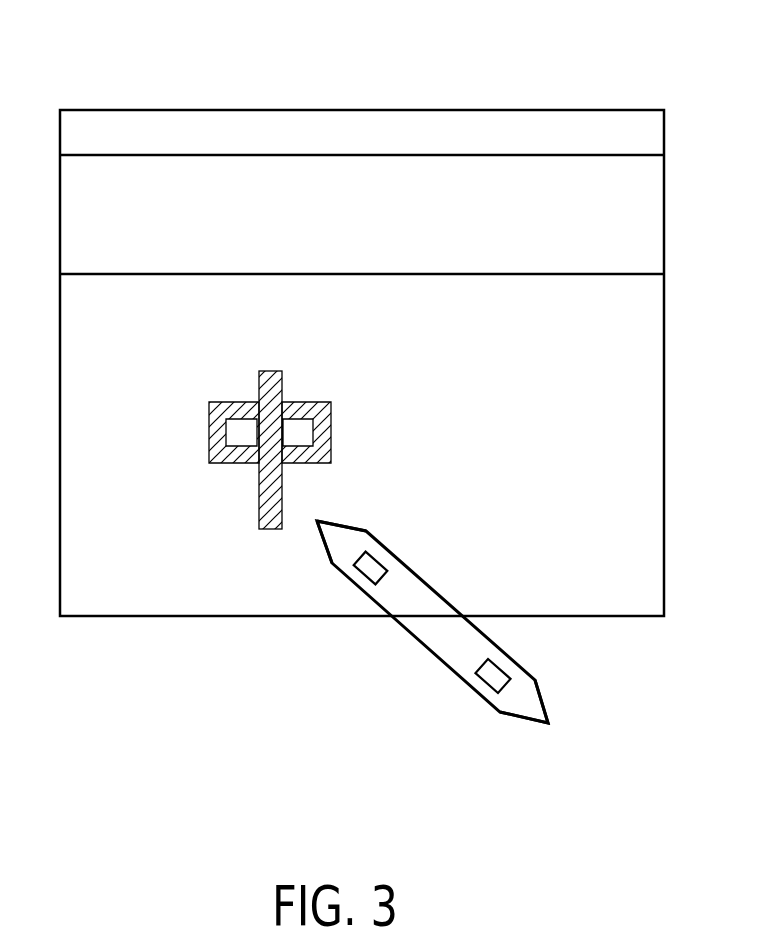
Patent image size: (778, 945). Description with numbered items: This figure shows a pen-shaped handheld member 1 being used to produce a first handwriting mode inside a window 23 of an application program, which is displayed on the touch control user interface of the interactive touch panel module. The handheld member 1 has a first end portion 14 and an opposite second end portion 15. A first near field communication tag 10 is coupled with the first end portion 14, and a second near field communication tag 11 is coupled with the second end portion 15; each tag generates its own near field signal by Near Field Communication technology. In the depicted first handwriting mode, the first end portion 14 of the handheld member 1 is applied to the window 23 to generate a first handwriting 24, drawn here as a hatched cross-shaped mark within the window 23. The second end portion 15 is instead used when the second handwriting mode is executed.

The handheld member 1 is at (547, 658).
The first near field communication tag 10 is at (372, 572).
The second near field communication tag 11 is at (490, 677).
The first end portion 14 is at (333, 543).
The second end portion 15 is at (530, 710).
The window 23 is at (597, 72).
The first handwriting 24 is at (229, 383).